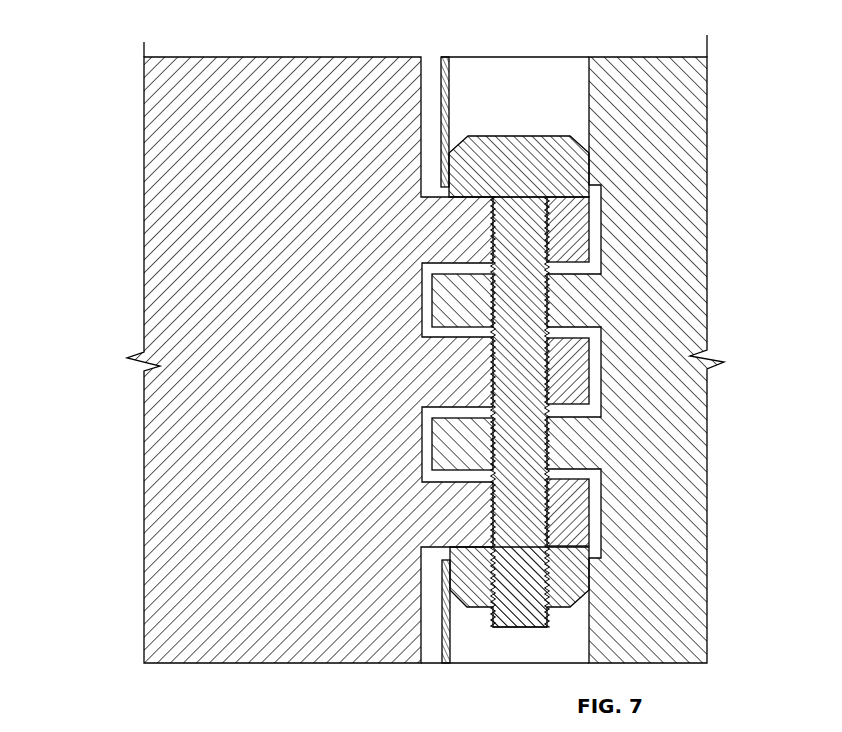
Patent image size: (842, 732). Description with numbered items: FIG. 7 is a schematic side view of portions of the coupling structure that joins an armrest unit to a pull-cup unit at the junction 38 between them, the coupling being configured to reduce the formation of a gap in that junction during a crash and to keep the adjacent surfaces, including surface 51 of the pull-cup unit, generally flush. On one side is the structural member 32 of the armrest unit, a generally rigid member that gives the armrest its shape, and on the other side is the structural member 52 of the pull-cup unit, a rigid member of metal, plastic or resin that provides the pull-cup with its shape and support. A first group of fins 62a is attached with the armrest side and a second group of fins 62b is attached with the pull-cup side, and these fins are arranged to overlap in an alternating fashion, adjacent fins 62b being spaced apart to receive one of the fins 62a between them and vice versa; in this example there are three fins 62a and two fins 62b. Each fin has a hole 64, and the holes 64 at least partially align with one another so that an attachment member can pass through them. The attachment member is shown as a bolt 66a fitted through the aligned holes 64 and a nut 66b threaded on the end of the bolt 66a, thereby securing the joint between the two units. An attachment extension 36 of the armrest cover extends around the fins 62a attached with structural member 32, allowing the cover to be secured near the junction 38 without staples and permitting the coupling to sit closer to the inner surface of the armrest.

The structural member 32 is at (328, 74).
The attachment extension 36 is at (421, 73).
The junction 38 is at (478, 42).
The surface 51 is at (442, 652).
The structural member 52 is at (668, 135).
The first group of fins 62a is at (460, 241).
The second group of fins 62b is at (562, 312).
The hole 64 is at (553, 222).
The bolt 66a is at (520, 215).
The nut 66b is at (575, 598).